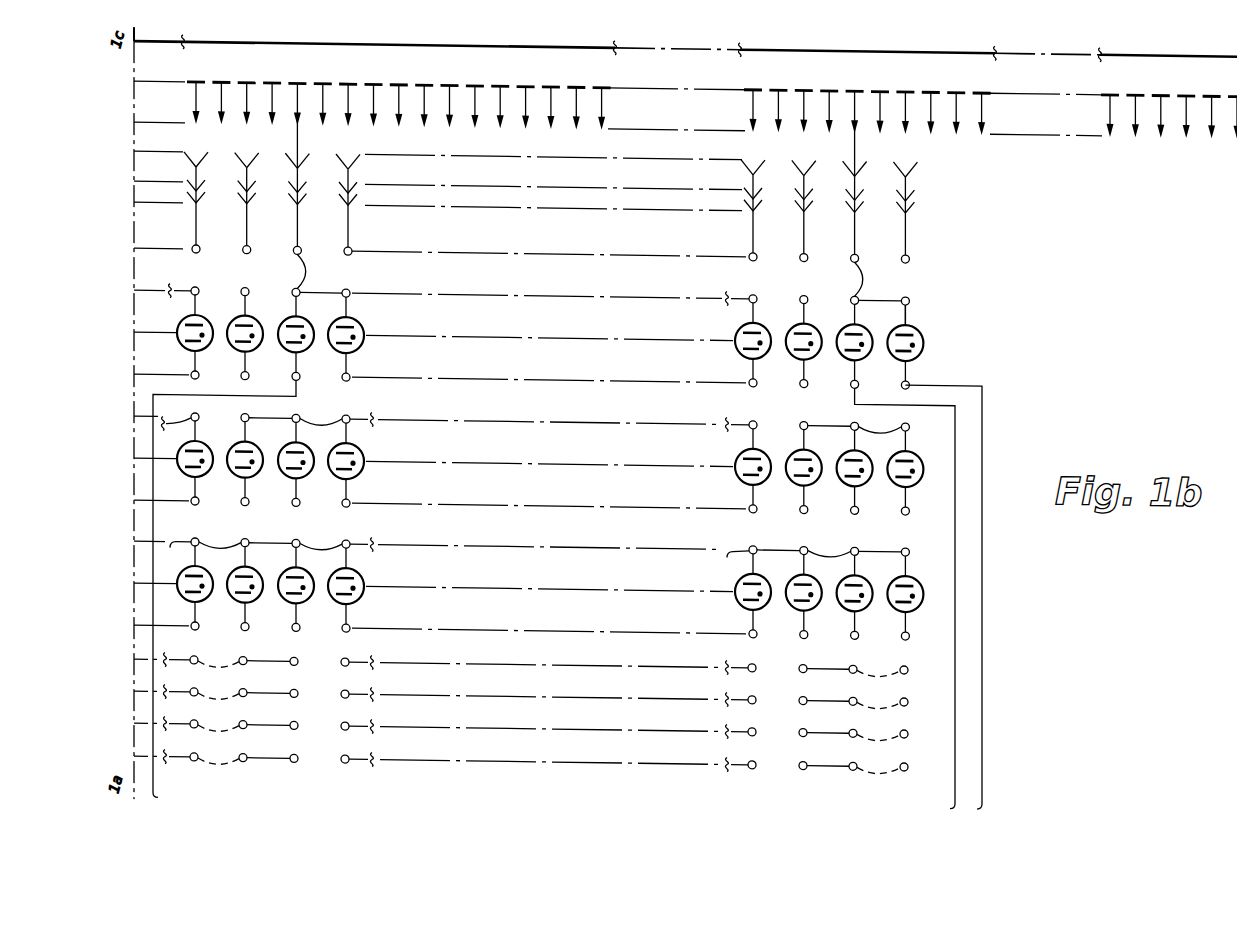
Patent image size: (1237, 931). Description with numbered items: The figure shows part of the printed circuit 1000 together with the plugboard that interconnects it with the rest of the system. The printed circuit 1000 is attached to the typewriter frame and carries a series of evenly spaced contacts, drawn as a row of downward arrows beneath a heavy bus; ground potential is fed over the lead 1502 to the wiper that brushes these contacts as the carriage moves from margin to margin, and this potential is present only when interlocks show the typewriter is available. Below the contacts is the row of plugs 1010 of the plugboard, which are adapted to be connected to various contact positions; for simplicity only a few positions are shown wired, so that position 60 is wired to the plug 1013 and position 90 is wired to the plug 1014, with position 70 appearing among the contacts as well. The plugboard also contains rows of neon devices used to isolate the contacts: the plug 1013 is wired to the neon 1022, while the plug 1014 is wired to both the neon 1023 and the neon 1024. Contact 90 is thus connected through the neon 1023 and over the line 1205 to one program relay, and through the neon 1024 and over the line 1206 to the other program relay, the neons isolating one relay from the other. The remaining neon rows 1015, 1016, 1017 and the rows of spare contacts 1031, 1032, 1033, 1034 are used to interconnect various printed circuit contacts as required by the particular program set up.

The lead 1502 is at (458, 44).
The printed circuit 1000 is at (612, 102).
The contact position 60 is at (297, 116).
The input line 70 is at (551, 98).
The contact position 90 is at (855, 124).
The plug 1013 is at (300, 177).
The plug 1014 is at (857, 176).
The row of plugs 1010 is at (910, 227).
The neon 1022 is at (290, 318).
The neon 1023 is at (847, 316).
The neon 1024 is at (922, 318).
The tube row 1015 is at (925, 330).
The tube row 1016 is at (927, 455).
The tube row 1017 is at (927, 590).
The spare contacts 1031 is at (912, 661).
The spare contacts 1032 is at (912, 692).
The spare contacts 1033 is at (912, 725).
The spare contacts 1034 is at (801, 764).
The line 1205 is at (950, 774).
The line 1206 is at (987, 777).